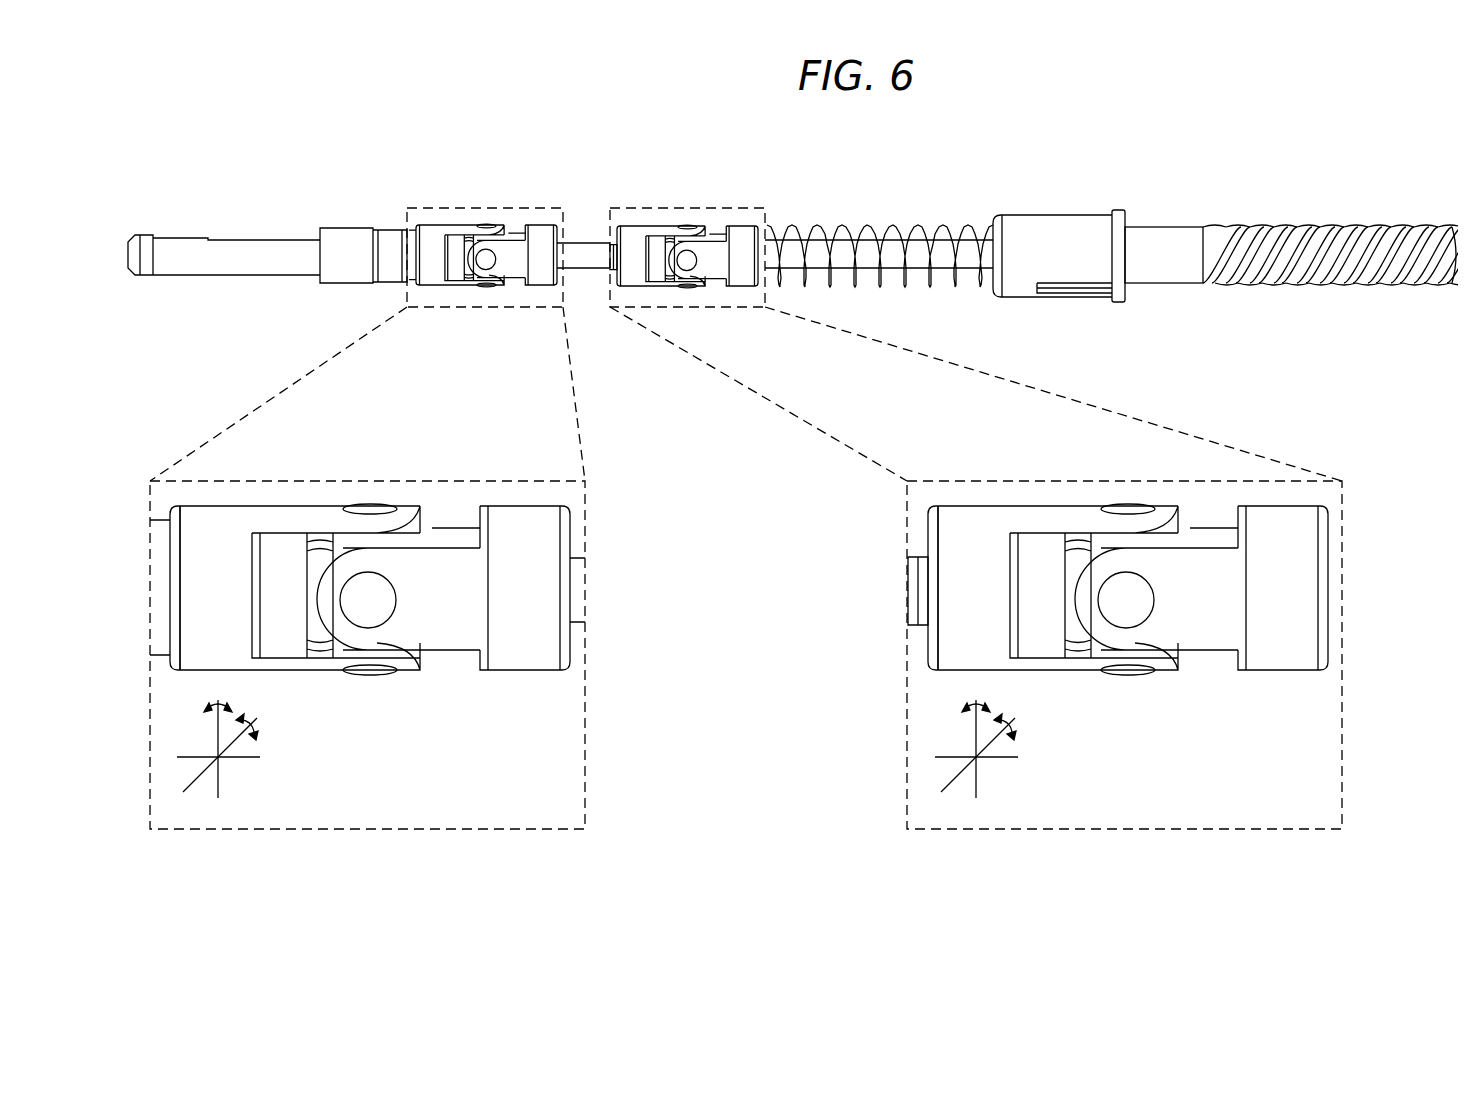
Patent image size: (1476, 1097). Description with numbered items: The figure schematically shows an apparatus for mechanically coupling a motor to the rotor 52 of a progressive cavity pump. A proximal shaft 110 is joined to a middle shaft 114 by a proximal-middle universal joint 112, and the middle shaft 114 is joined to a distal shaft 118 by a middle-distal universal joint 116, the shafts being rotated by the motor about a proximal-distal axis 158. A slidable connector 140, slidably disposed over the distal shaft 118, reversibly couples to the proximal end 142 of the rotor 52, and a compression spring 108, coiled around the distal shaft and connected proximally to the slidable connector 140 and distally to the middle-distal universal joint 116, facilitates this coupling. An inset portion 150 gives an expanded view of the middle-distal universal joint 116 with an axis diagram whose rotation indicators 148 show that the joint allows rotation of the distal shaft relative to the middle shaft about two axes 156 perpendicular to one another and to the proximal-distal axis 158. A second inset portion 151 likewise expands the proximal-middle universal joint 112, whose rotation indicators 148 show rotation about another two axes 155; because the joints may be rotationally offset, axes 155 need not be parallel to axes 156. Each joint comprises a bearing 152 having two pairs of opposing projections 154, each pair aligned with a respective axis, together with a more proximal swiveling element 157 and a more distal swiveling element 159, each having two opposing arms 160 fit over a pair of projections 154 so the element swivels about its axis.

The rotor 52 is at (1180, 227).
The compression spring 108 is at (815, 230).
The proximal shaft 110 is at (256, 237).
The proximal-middle universal joint 112 is at (560, 207).
The middle shaft 114 is at (580, 243).
The middle-distal universal joint 116 is at (762, 207).
The distal shaft 118 is at (897, 232).
The slidable connector 140 is at (1038, 215).
The proximal end 142 is at (1116, 210).
The rotation indicators 148 is at (206, 709).
The inset portion 150 is at (1342, 712).
The inset portion 151 is at (585, 712).
The bearing 152 is at (430, 530).
The projections 154 is at (367, 505).
The axes 155 is at (218, 730).
The axes 156 is at (976, 730).
The more proximal swiveling element 157 is at (193, 543).
The proximal-distal axis 158 is at (245, 760).
The more distal swiveling element 159 is at (507, 506).
The arms 160 is at (294, 505).